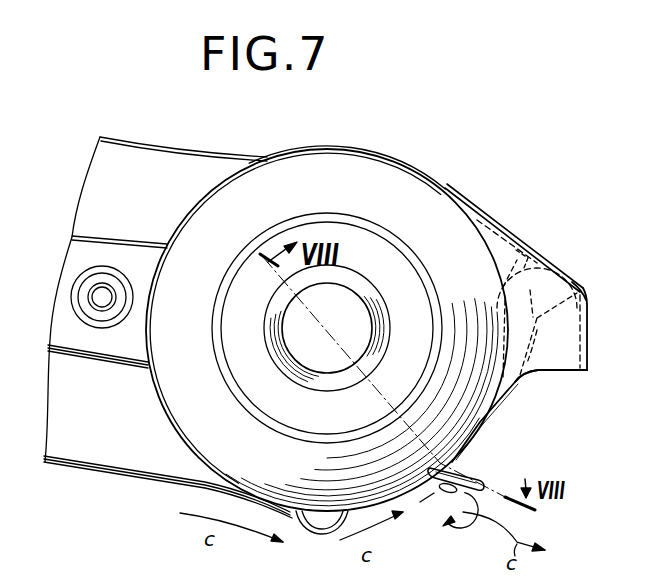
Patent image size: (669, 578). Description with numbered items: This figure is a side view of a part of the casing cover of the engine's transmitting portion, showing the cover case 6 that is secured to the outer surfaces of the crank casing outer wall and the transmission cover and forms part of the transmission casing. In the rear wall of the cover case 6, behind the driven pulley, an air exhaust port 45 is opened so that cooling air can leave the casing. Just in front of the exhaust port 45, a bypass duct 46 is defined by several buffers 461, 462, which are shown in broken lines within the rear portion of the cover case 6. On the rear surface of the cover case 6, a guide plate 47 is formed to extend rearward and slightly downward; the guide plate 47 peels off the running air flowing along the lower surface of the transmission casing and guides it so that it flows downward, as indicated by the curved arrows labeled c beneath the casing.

The cover case 6 is at (408, 185).
The bypass duct 46 is at (537, 323).
The buffer 461 is at (518, 248).
The buffer 462 is at (578, 300).
The air exhaust port 45 is at (550, 353).
The guide plate 47 is at (472, 467).